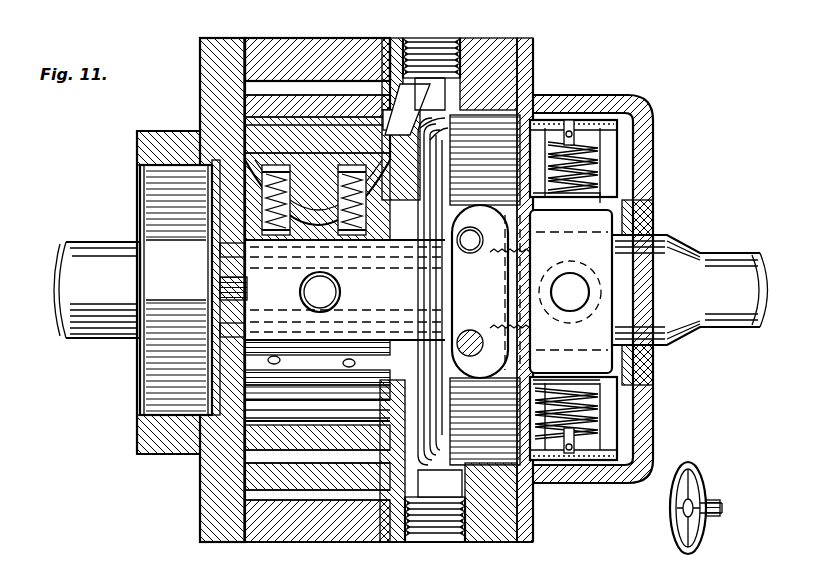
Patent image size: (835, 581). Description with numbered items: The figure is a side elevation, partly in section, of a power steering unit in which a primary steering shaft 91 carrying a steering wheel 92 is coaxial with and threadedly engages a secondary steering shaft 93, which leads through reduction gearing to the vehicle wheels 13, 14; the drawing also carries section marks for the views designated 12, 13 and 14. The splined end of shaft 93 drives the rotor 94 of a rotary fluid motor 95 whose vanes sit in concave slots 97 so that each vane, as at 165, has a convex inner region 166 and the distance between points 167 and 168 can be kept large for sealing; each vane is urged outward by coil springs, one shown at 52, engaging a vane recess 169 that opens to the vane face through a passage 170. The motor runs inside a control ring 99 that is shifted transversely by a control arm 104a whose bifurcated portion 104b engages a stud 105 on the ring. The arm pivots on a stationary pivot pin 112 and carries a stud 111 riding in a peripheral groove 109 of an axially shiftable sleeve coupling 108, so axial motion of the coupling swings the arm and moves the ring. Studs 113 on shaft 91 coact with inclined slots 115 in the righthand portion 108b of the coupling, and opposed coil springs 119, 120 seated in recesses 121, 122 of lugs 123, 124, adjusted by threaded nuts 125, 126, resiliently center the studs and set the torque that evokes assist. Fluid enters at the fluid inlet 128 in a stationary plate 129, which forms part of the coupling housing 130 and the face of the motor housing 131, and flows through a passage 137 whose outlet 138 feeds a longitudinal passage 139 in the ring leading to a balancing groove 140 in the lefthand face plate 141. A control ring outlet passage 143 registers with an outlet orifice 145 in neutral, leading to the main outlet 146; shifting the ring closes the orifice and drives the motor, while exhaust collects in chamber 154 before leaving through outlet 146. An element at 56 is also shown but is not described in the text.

The section line 12- 12 is at (31, 280).
The wheel 13 is at (507, 19).
The wheel 14 is at (256, 19).
The coil spring 52 is at (316, 286).
The valve plate 56 is at (393, 257).
The primary steering shaft 91 is at (717, 260).
The steering wheel 92 is at (673, 533).
The secondary steering shaft 93 is at (85, 333).
The rotor 94 is at (250, 395).
The rotary motor 95 is at (212, 484).
The slots 97 is at (257, 203).
The control ring 99 is at (207, 68).
The control arm 104a is at (362, 310).
The bifurcated portion 104b is at (300, 321).
The stud 105 is at (300, 290).
The sleeve coupling 108 is at (540, 493).
The righthand portion of the sleeve coupling 108b is at (607, 283).
The peripheral groove 109 is at (547, 87).
The stud 111 is at (470, 250).
The stationary pivot pin 112 is at (465, 328).
The stud 113 is at (570, 292).
The inclined slot 115 is at (598, 292).
The coil spring 119 is at (617, 200).
The coil spring 120 is at (648, 387).
The recess 121 is at (606, 167).
The recess 122 is at (603, 430).
The lug 123 is at (608, 143).
The lug 124 is at (607, 415).
The threaded nut 125 is at (572, 120).
The threaded nut 126 is at (568, 452).
The fluid inlet 128 is at (450, 37).
The stationary plate 129 is at (540, 41).
The housing 130 is at (540, 82).
The housing 131 is at (363, 45).
The passage 137 is at (388, 45).
The outlet 138 is at (425, 168).
The longitudinally extending passage 139 is at (265, 112).
The balancing groove 140 is at (253, 103).
The lefthand face plate 141 is at (213, 127).
The control ring outlet passage 143 is at (280, 455).
The outlet orifice 145 is at (440, 442).
The main outlet 146 is at (410, 543).
The chamber 154 is at (523, 100).
The vane 165 is at (270, 158).
The convex inner region 166 is at (318, 230).
The point 167 is at (197, 197).
The point 168 is at (213, 233).
The vane recess 169 is at (380, 200).
The passage 170 is at (352, 165).